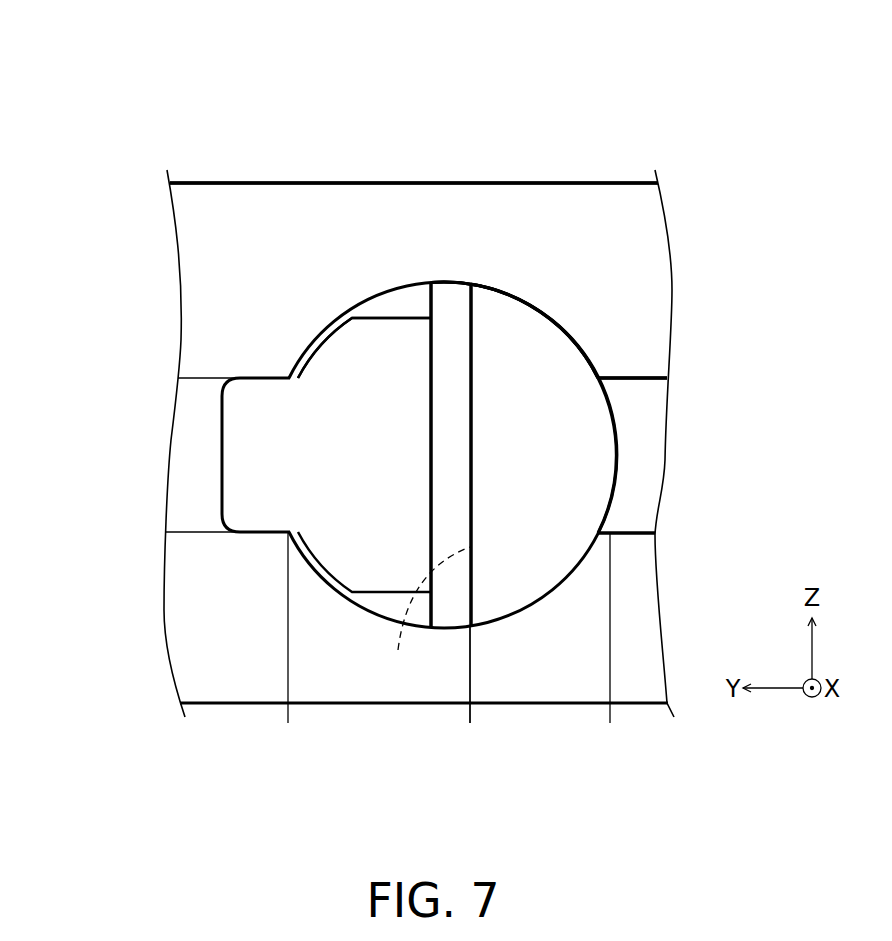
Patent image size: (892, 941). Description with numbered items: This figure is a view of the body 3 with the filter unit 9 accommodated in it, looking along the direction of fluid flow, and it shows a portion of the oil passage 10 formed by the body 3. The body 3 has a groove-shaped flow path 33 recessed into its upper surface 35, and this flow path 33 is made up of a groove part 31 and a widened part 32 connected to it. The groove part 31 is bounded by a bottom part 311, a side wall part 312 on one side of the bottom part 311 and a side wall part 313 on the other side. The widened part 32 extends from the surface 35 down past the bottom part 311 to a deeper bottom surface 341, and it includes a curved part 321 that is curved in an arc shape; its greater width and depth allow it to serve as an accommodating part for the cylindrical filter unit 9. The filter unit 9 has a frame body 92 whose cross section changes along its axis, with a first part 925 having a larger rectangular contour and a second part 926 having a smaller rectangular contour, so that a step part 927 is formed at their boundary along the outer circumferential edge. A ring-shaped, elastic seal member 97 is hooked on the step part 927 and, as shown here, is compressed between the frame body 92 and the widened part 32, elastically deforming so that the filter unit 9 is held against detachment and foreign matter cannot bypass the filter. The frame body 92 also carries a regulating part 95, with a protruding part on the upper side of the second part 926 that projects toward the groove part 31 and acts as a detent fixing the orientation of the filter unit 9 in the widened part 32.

The sensor device 10 is at (752, 102).
The body 3 is at (600, 182).
The upper surface 35 is at (618, 212).
The groove-shaped flow path 33 is at (790, 235).
The widened part 32 is at (568, 330).
The curved part 321 is at (532, 304).
The groove part 31 is at (638, 378).
The bottom part 311 is at (652, 459).
The side wall part 312 is at (625, 379).
The side wall part 313 is at (632, 532).
The filter unit 9 is at (397, 317).
The bottom surface 341 is at (413, 297).
The seal member 97 is at (455, 282).
The regulating part 95 is at (247, 443).
The frame body 92 is at (355, 770).
The first part 925 is at (472, 723).
The second part 926 is at (288, 723).
The step part 927 is at (421, 614).